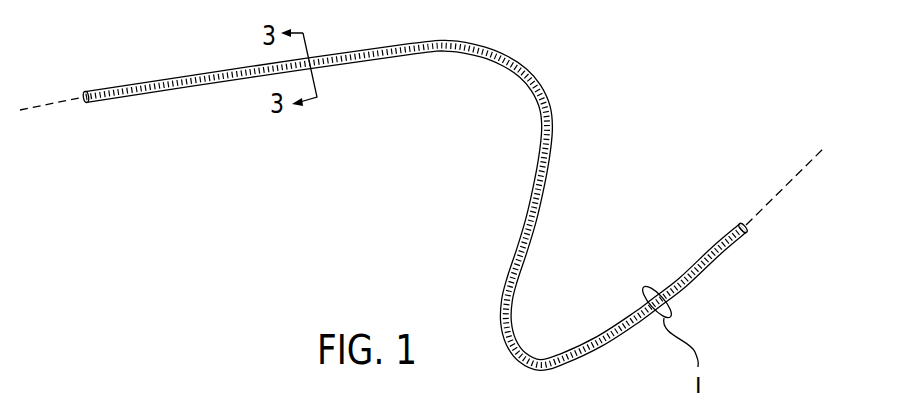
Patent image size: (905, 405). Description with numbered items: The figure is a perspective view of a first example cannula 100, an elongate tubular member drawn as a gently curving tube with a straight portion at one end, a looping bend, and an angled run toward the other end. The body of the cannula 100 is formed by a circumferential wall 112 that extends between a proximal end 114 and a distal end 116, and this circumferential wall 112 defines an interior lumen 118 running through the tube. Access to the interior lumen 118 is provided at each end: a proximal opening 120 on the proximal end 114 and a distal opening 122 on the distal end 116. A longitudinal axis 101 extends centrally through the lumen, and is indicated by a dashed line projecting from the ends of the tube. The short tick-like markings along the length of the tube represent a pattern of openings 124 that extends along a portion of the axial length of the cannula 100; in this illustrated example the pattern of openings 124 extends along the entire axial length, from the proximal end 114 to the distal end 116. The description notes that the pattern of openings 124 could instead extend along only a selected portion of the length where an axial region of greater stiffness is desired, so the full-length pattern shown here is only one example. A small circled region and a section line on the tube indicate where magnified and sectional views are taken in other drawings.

The cannula 100 is at (526, 192).
The longitudinal axis 101 is at (812, 157).
The circumferential wall 112 is at (150, 99).
The proximal end 114 is at (87, 101).
The distal end 116 is at (747, 236).
The interior lumen 118 is at (744, 222).
The proximal opening 120 is at (80, 98).
The distal opening 122 is at (752, 224).
The pattern of openings 124 is at (561, 96).